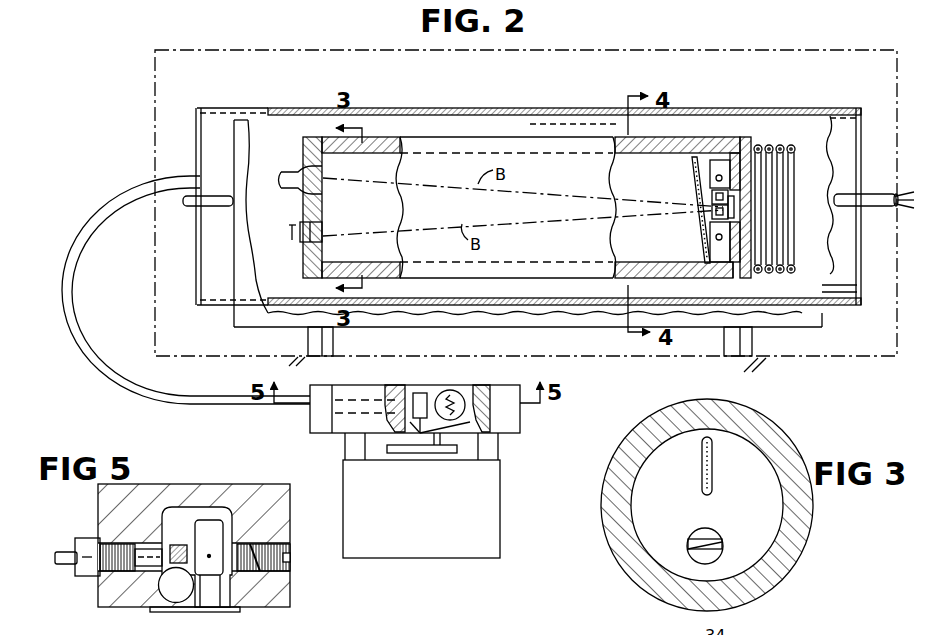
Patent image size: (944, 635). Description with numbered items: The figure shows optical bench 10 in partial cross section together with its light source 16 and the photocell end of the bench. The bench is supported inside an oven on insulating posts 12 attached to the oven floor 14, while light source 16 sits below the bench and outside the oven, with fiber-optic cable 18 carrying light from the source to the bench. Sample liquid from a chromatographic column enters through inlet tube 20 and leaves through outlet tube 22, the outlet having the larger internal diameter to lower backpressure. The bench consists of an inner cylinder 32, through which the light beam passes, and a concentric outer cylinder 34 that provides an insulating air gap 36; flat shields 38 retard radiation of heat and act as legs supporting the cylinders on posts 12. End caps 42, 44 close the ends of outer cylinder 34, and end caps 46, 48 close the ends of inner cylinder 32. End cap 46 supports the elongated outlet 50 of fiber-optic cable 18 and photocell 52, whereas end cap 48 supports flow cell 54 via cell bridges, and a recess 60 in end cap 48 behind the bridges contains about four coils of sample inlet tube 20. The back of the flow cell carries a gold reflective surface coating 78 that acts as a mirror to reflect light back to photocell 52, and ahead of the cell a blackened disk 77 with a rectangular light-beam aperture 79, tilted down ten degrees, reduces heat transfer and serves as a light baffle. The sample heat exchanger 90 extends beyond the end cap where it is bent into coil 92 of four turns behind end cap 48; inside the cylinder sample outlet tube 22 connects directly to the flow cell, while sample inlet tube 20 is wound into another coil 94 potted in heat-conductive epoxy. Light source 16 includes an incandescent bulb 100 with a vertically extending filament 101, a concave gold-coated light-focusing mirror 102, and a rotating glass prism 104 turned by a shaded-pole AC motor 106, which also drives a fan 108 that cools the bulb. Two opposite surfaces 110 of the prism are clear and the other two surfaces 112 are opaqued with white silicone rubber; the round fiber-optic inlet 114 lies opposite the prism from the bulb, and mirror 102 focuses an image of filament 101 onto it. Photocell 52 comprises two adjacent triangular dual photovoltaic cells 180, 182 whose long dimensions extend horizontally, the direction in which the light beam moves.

In FIG. 2, the optical bench 10 is at (79, 136).
In FIG. 2, the insulating posts 12 is at (308, 339).
In FIG. 2, the floor 14 is at (603, 356).
In FIG. 2, the light source 16 is at (318, 436).
In FIG. 2, the fiber-optic cable 18 is at (96, 212).
In FIG. 2, the sample inlet tube 20 is at (898, 210).
In FIG. 2, the sample outlet tube 22 is at (897, 198).
In FIG. 2, the inner cylinder 32 is at (487, 135).
In FIG. 3, the inner cylinder 32 is at (775, 433).
In FIG. 2, the outer cylinder 34 is at (525, 110).
In FIG. 2, the insulating air gap 36 is at (568, 124).
In FIG. 2, the flat shields 38 is at (235, 323).
In FIG. 2, the end cap 42 is at (198, 122).
In FIG. 2, the end cap 44 is at (862, 125).
In FIG. 2, the end cap 46 is at (305, 145).
In FIG. 3, the end cap 46 is at (683, 506).
In FIG. 2, the end cap 48 is at (750, 140).
In FIG. 2, the elongated outlet 50 is at (322, 178).
In FIG. 3, the elongated outlet 50 is at (712, 480).
In FIG. 2, the photocell 52 is at (324, 239).
In FIG. 3, the photocell 52 is at (720, 530).
In FIG. 2, the flow cell 54 is at (712, 220).
In FIG. 2, the recess 60 is at (717, 165).
In FIG. 2, the blackened disk 77 is at (692, 182).
In FIG. 2, the reflective surface coating 78 is at (732, 204).
In FIG. 2, the light-beam aperture 79 is at (712, 200).
In FIG. 2, the sample heat exchanger 90 is at (210, 209).
In FIG. 2, the coil 92 is at (778, 276).
In FIG. 2, the coil 94 is at (696, 280).
In FIG. 2, the incandescent bulb 100 is at (455, 410).
In FIG. 5, the incandescent bulb 100 is at (211, 520).
In FIG. 2, the filament 101 is at (451, 390).
In FIG. 5, the filament 101 is at (209, 558).
In FIG. 2, the concave light-focusing mirror 102 is at (476, 393).
In FIG. 5, the concave light-focusing mirror 102 is at (236, 611).
In FIG. 2, the rotating prism 104 is at (420, 393).
In FIG. 2, the shaded-pole AC motor 106 is at (438, 559).
In FIG. 2, the fan 108 is at (392, 453).
In FIG. 5, the clear surfaces 110 is at (176, 600).
In FIG. 5, the opaqued surfaces 112 is at (178, 545).
In FIG. 2, the fiber-optic inlet 114 is at (403, 392).
In FIG. 5, the fiber-optic inlet 114 is at (165, 547).
In FIG. 3, the triangular dual photovoltaic cell 180 is at (697, 560).
In FIG. 3, the triangular dual photovoltaic cell 182 is at (690, 543).